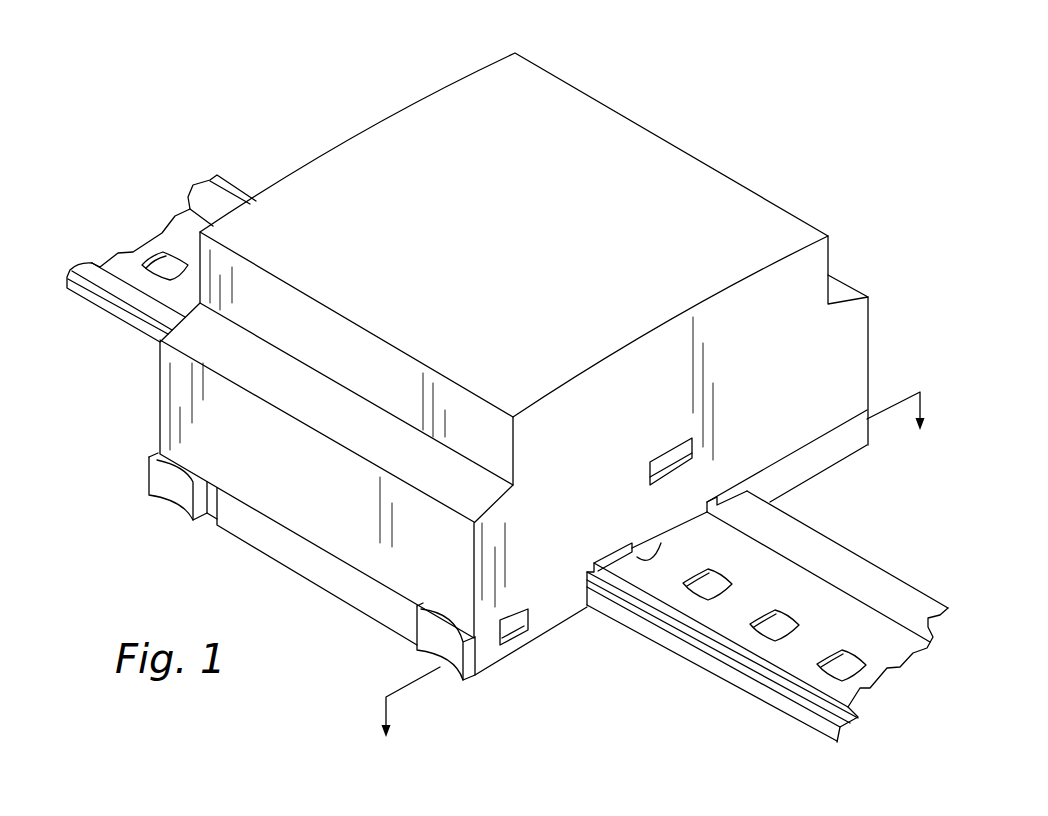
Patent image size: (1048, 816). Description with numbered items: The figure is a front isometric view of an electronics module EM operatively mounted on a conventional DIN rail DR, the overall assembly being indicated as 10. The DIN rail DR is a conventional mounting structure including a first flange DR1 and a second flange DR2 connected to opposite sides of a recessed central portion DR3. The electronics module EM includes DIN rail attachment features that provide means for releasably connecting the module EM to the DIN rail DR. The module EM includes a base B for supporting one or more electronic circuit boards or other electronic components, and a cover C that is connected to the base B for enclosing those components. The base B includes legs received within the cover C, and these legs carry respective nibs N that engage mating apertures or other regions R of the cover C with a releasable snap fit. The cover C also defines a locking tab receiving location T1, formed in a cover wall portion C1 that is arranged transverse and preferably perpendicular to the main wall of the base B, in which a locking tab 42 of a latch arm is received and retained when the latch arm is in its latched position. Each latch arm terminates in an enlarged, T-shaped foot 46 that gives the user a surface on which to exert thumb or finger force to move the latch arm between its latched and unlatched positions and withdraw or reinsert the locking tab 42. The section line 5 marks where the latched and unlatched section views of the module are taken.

The electrical device assembly 10 is at (795, 463).
The electronics module EM is at (749, 334).
The cover C is at (852, 328).
The regions of the cover R is at (677, 453).
The nibs N is at (673, 467).
The base B is at (850, 445).
The cover wall portion C1 is at (560, 595).
The locking tab receiving location T1 is at (527, 625).
The locking tabs 42 is at (507, 628).
The foot 46 is at (175, 487).
The DIN rail DR is at (833, 616).
The first flange DR1 is at (842, 556).
The second flange DR2 is at (750, 660).
The recessed central portion DR3 is at (810, 680).
The section line 5- 5 is at (652, 578).